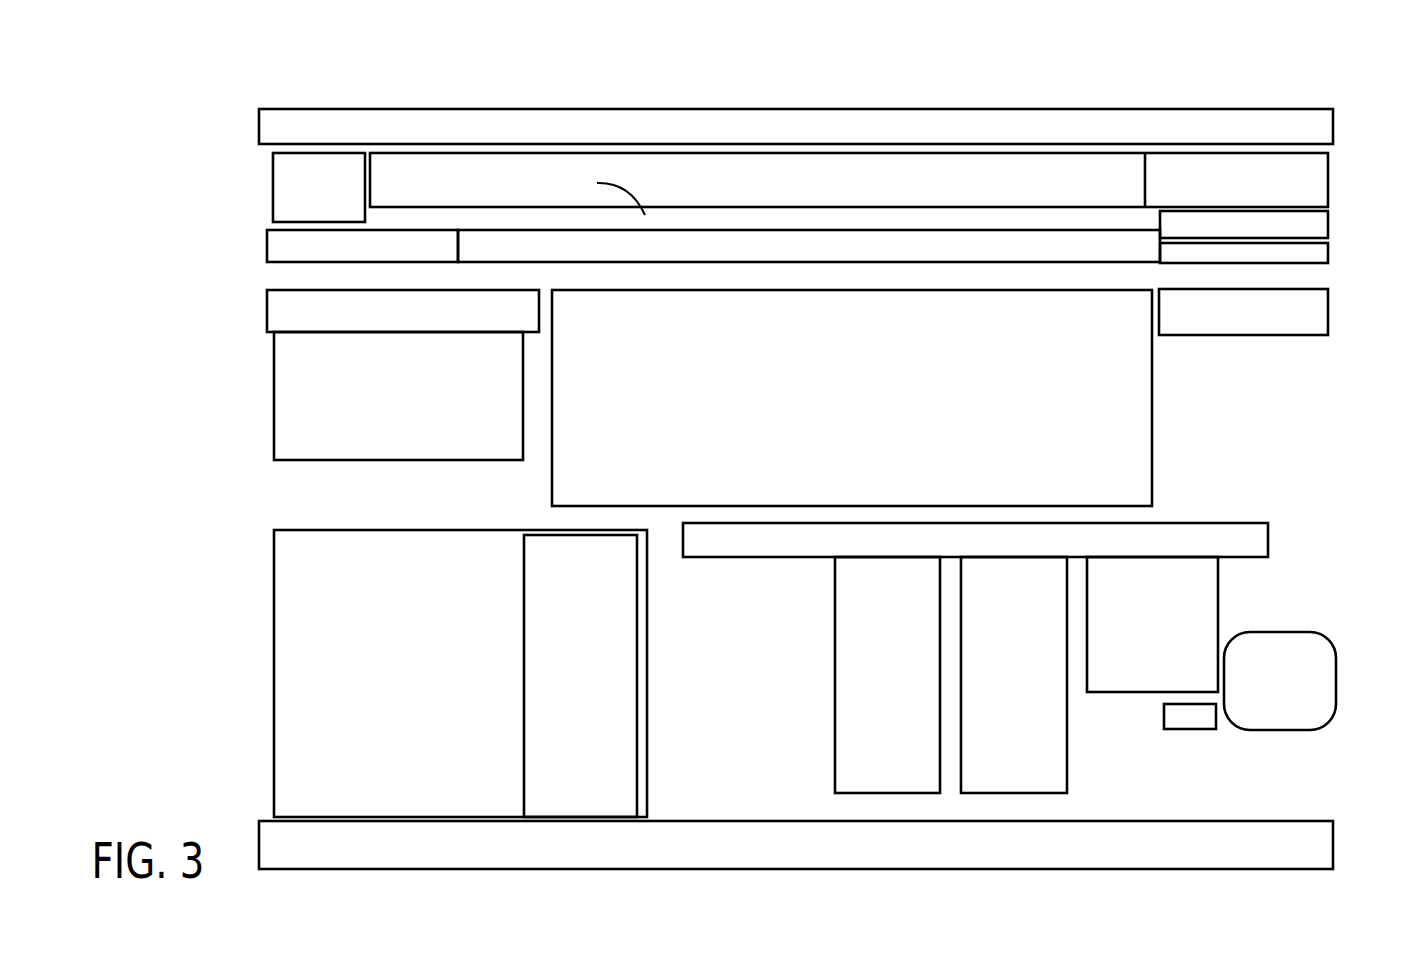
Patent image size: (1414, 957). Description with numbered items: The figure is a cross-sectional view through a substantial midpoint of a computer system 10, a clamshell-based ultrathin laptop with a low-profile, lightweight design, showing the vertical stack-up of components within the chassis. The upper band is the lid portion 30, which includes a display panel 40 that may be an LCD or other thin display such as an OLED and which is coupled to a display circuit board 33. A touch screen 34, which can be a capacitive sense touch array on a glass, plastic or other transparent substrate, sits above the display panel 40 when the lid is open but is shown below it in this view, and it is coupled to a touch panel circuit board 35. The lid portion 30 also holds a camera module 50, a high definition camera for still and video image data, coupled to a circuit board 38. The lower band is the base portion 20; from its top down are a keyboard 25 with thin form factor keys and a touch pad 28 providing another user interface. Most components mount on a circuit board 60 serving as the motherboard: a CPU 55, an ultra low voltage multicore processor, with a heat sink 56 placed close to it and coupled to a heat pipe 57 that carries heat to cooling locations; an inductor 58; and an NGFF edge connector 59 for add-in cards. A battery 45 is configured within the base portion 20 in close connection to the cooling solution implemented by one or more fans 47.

The computer system 10 is at (315, 83).
The base portion 20 is at (208, 290).
The keyboard 25 is at (839, 442).
The touch pad 28 is at (386, 423).
The lid portion 30 is at (208, 110).
The display circuit board 33 is at (1329, 180).
The touch screen 34 is at (641, 260).
The touch panel circuit board 35 is at (1329, 225).
The circuit board 38 is at (267, 243).
The display panel 40 is at (755, 151).
The battery 45 is at (386, 717).
The fan 47 is at (639, 676).
The camera module 50 is at (273, 188).
The CPU 55 is at (1153, 694).
The heat sink 56 is at (1188, 730).
The heat pipe 57 is at (1328, 634).
The inductor 58 is at (999, 721).
The NGFF edge connector 59 is at (834, 678).
The circuit board 60 is at (1225, 533).